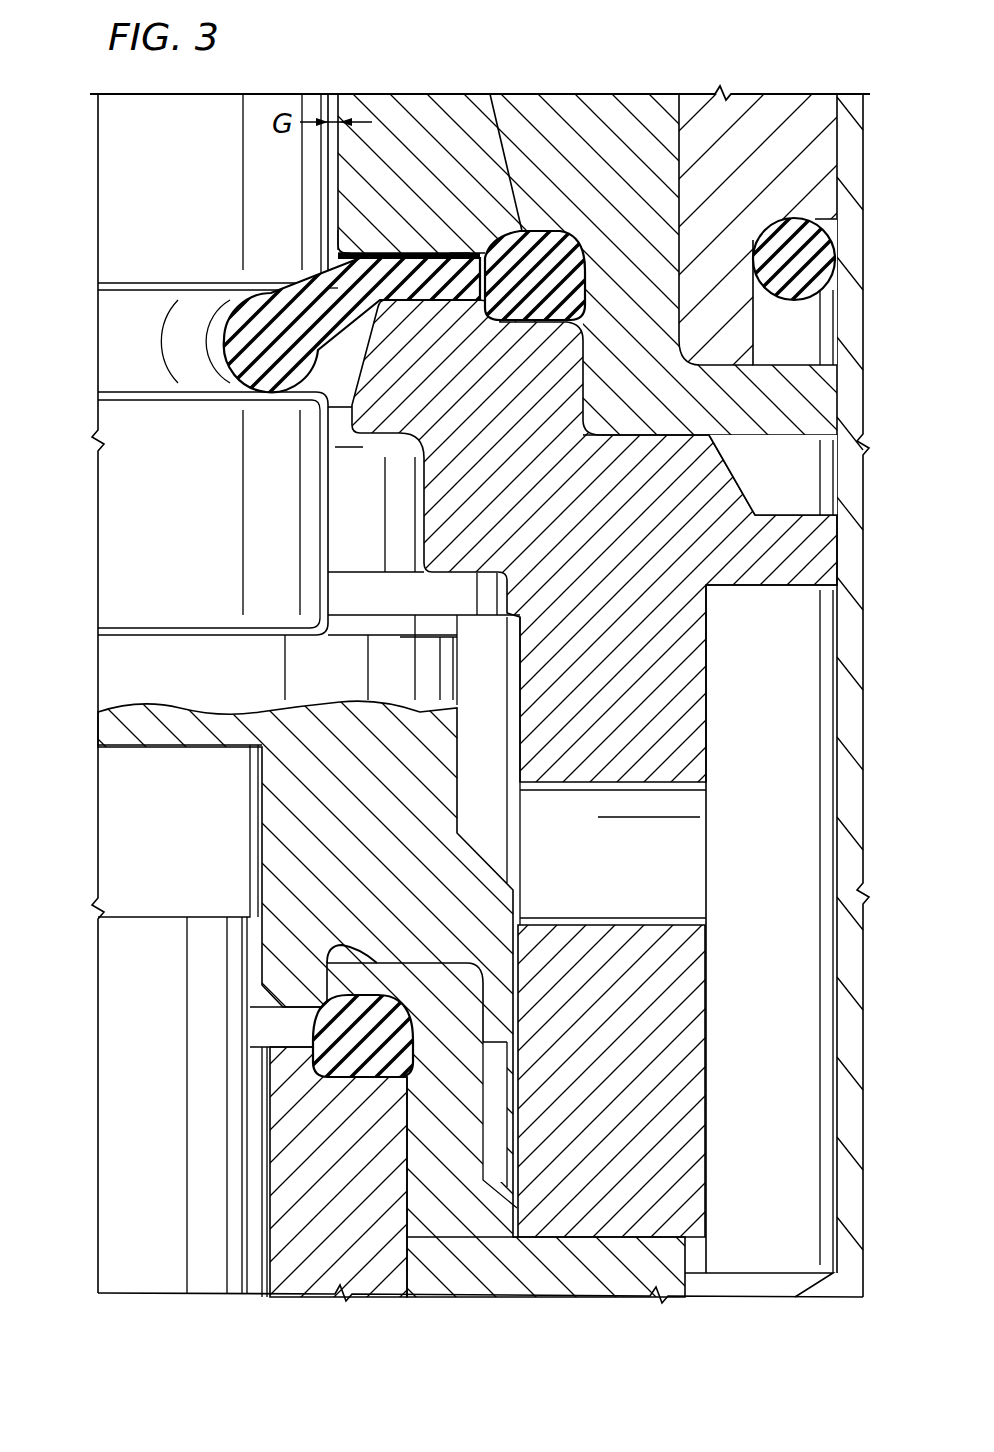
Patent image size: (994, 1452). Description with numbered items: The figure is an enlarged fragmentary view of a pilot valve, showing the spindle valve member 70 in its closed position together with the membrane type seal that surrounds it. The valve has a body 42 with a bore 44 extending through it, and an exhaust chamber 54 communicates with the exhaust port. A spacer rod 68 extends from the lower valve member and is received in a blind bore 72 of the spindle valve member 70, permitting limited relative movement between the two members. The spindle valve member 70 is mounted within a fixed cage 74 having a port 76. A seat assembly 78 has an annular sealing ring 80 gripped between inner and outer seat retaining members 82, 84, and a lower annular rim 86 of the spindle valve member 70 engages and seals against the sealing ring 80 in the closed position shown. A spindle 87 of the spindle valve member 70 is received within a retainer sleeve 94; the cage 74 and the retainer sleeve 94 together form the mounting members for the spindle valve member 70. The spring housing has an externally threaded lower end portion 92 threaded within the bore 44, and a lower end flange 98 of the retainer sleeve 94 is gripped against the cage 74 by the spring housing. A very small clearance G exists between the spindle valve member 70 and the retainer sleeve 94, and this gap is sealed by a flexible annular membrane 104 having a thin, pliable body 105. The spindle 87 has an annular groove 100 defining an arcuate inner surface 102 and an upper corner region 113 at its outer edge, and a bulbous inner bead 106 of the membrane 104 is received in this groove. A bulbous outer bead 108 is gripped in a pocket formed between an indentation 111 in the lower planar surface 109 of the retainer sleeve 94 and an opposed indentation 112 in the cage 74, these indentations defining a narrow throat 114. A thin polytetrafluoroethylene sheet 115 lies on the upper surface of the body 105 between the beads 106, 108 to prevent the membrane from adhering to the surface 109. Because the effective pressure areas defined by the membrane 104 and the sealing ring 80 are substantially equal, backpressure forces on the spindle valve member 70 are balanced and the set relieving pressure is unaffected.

The body 42 is at (850, 740).
The bore 44 is at (835, 640).
The exhaust chamber 54 is at (490, 803).
The spacer rod 68 is at (108, 1236).
The spindle valve member 70 is at (300, 835).
The blind bore 72 is at (190, 803).
The fixed cage 74 is at (686, 703).
The port 76 is at (686, 858).
The seat assembly 78 is at (286, 1162).
The annular sealing ring 80 is at (318, 1048).
The inner seat retaining member 82 is at (290, 1115).
The outer seat retaining member 84 is at (432, 1225).
The lower annular rim 86 is at (312, 1018).
The spindle 87 is at (200, 516).
The externally threaded lower end portion 92 is at (803, 160).
The retainer sleeve 94 is at (637, 142).
The lower end flange 98 is at (802, 436).
The annular groove 100 is at (106, 300).
The arcuate inner surface 102 is at (243, 297).
The membrane 104 is at (410, 250).
The thin pliable body 105 is at (338, 246).
The inner bead 106 is at (275, 378).
The outer bead 108 is at (563, 235).
The lower planar surface 109 is at (460, 250).
The indentation 111 is at (498, 120).
The opposed indentation 112 is at (528, 325).
The sealing edge 113 is at (340, 256).
The throat 114 is at (472, 304).
The polytetrafluoroethylene sheet 115 is at (418, 252).